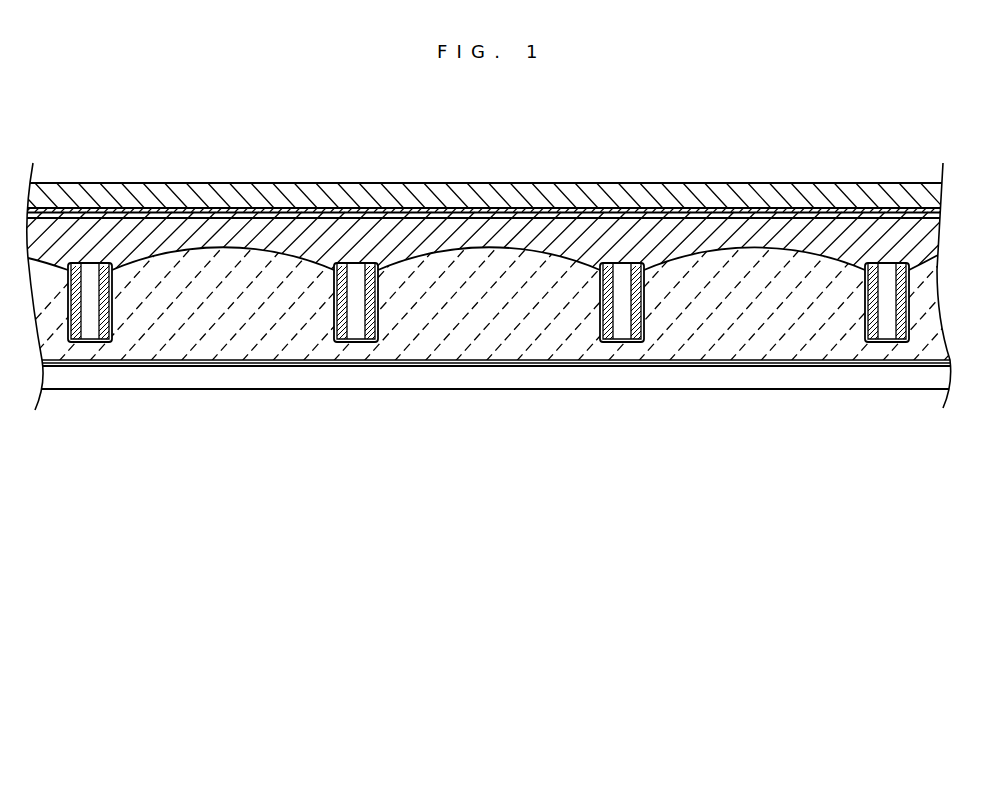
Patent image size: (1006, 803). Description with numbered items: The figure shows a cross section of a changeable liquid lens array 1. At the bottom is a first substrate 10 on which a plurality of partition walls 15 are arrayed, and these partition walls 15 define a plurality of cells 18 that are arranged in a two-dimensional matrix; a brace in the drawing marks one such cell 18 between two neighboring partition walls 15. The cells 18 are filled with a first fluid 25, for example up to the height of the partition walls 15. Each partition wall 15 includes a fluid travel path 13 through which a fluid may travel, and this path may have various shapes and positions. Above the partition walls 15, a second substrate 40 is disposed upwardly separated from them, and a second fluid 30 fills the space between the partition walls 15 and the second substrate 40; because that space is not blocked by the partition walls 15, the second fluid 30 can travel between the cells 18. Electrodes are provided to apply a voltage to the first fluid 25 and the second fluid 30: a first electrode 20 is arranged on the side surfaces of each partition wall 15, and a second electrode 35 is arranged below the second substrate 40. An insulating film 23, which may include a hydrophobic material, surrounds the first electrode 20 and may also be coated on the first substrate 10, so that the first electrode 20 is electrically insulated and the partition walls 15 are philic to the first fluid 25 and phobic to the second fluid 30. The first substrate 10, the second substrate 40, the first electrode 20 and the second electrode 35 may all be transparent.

The changeable liquid lens array 1 is at (222, 149).
The first substrate 10 is at (818, 380).
The fluid travel path 13 is at (622, 352).
The partition wall 15 is at (887, 333).
The cell 18 is at (357, 400).
The first electrode 20 is at (904, 333).
The insulating film 23 is at (907, 300).
The first fluid 25 is at (755, 320).
The second fluid 30 is at (695, 233).
The second electrode 35 is at (750, 213).
The second substrate 40 is at (843, 192).